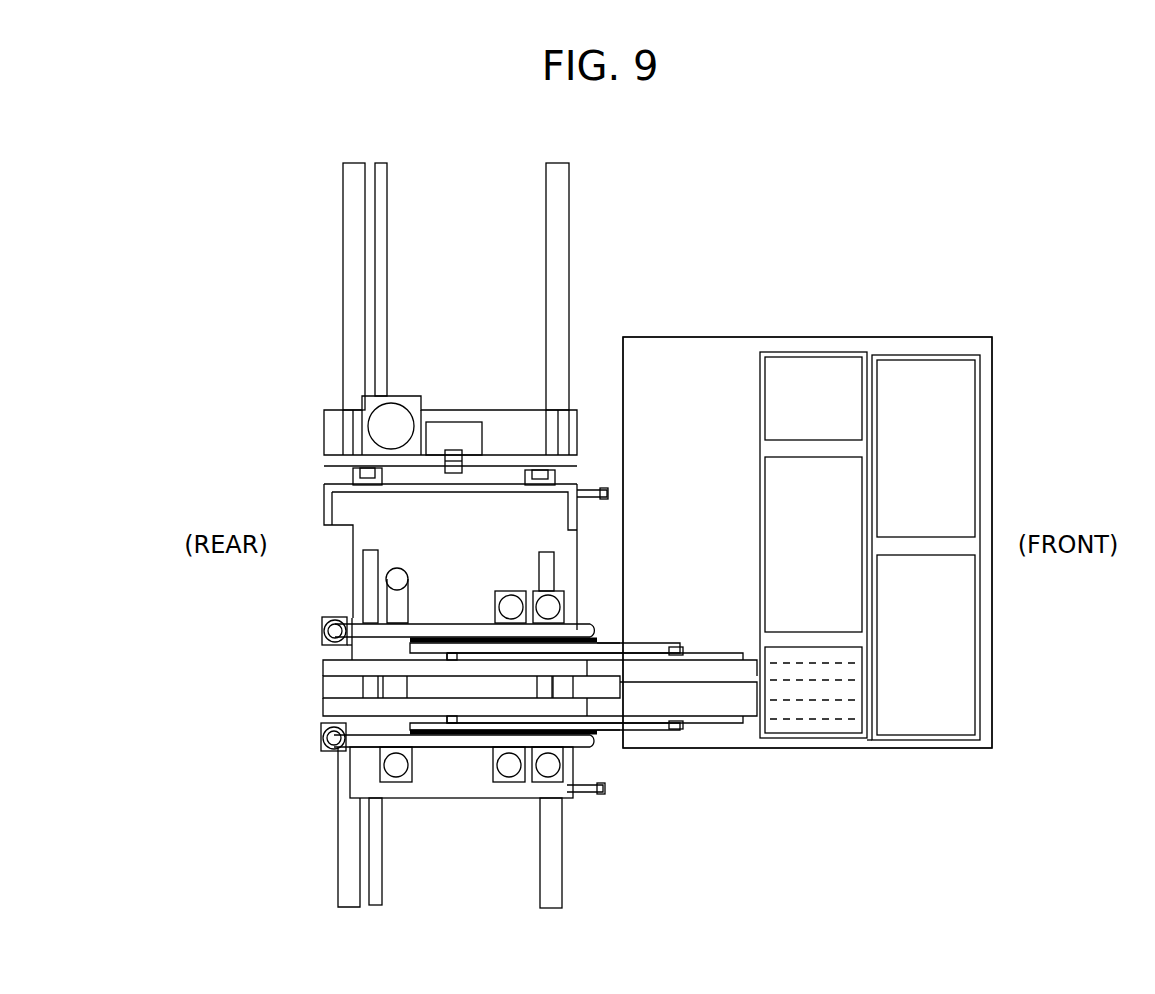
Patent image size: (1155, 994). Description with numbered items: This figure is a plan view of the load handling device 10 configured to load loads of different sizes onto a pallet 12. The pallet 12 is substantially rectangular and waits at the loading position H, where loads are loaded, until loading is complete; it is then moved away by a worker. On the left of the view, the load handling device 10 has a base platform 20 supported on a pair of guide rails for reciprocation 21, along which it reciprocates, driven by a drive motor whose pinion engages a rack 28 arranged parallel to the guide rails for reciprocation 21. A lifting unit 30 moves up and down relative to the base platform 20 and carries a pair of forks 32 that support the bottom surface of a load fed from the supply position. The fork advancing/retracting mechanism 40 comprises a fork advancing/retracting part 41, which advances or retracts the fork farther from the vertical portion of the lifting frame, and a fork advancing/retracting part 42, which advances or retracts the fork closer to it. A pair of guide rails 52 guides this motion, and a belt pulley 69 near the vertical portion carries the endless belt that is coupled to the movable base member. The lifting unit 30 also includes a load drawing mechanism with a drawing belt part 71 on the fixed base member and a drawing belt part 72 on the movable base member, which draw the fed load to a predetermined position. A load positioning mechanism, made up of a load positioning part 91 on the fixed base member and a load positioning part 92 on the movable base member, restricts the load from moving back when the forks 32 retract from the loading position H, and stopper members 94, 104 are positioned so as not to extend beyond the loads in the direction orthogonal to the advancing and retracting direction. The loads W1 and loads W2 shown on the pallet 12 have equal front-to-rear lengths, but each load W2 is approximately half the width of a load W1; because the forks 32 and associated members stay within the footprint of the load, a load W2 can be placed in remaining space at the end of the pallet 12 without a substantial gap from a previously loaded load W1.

The load handling device 10 is at (695, 187).
The pallet 12 is at (697, 337).
The base platform 20 is at (497, 410).
The guide rails for reciprocation 21 is at (343, 250).
The rack 28 is at (387, 240).
The lifting unit 30 is at (322, 507).
The forks 32 is at (712, 655).
The fork advancing/retracting mechanism 40 is at (228, 658).
The fork advancing/retracting part 41 is at (322, 708).
The fork advancing/retracting part 42 is at (322, 667).
The guide rails 52 is at (363, 592).
The belt pulley 69 is at (397, 579).
The drawing belt part 71 is at (462, 752).
The drawing belt part 72 is at (465, 622).
The load positioning part 91 is at (610, 745).
The load positioning part 92 is at (610, 640).
The stopper member 94 is at (677, 730).
The stopper member 104 is at (677, 647).
The load W1 is at (928, 355).
The load W2 is at (818, 352).
The loading position H is at (873, 752).